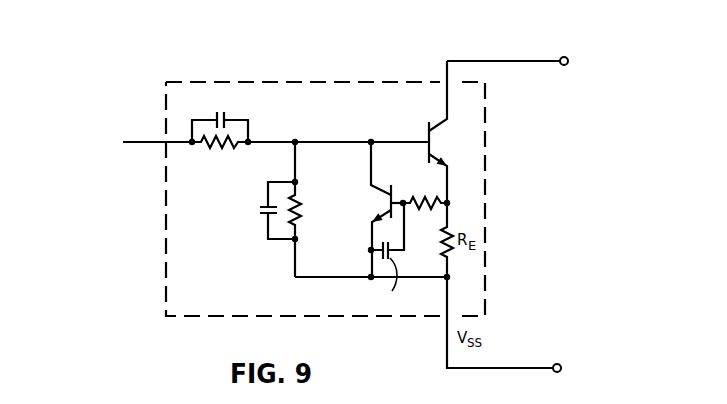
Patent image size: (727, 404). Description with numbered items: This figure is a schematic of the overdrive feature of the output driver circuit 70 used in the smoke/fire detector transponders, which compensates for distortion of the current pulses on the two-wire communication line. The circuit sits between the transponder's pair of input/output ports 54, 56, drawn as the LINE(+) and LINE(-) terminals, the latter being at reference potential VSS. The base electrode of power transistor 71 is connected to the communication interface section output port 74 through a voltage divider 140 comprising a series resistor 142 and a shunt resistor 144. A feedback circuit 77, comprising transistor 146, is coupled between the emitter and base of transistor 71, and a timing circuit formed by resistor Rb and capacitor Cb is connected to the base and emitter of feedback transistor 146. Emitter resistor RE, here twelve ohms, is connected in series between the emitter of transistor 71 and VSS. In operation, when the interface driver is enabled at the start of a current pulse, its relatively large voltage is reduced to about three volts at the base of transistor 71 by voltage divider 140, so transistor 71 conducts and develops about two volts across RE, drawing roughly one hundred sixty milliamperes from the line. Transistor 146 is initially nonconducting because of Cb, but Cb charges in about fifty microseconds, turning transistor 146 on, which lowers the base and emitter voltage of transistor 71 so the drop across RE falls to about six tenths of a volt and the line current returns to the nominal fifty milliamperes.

The output driver circuit 70 is at (352, 80).
The power transistor 71 is at (440, 129).
The input/output port 54 is at (567, 67).
The input/output port 56 is at (556, 363).
The communication interface section output port 74 is at (127, 146).
The voltage divider 140 is at (268, 187).
The resistor 142 is at (210, 148).
The resistor 144 is at (298, 205).
The transistor 146 is at (377, 190).
The feedback circuit 77 is at (353, 217).